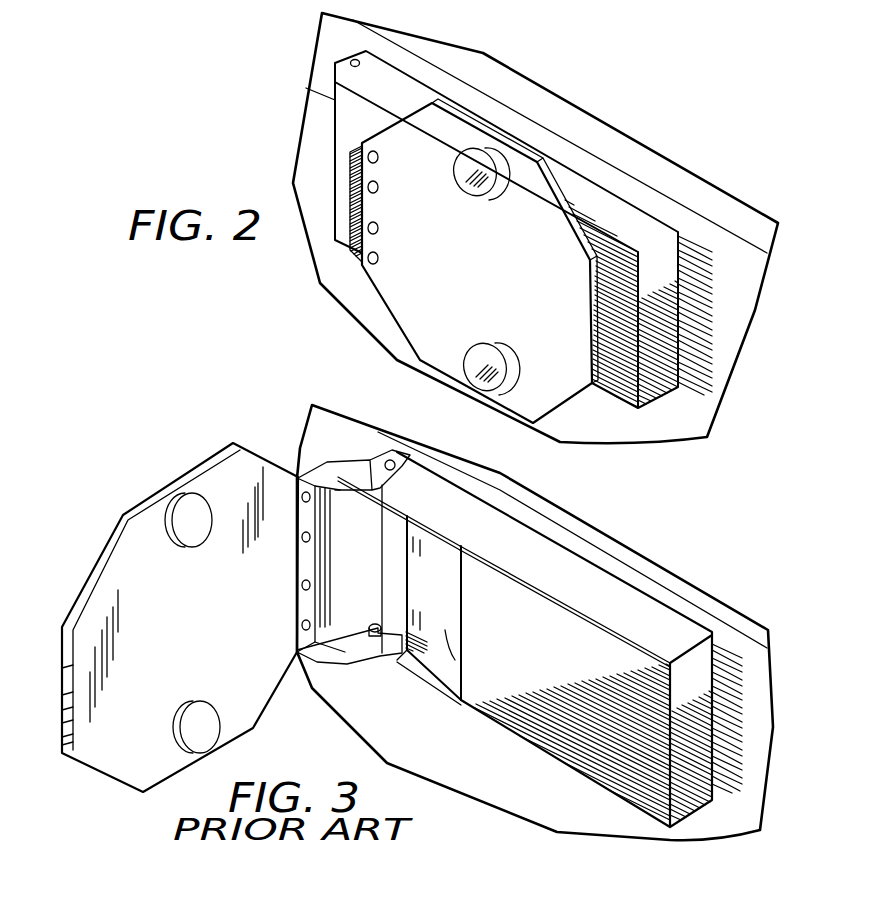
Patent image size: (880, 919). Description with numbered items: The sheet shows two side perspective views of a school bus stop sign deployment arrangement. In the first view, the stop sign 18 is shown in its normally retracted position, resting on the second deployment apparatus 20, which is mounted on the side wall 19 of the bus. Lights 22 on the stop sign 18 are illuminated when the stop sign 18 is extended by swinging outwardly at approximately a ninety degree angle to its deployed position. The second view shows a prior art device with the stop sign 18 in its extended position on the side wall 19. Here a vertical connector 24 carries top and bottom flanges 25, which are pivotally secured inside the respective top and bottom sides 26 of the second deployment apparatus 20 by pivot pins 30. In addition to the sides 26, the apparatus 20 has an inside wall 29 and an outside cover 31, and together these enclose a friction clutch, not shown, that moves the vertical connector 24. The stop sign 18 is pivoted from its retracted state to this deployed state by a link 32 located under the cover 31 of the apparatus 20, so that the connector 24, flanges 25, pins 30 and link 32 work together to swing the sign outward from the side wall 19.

In FIG. 2, the stop sign 18 is at (560, 403).
In FIG. 3, the stop sign 18 is at (177, 477).
In FIG. 2, the side wall 19 is at (750, 278).
In FIG. 2, the second deployment apparatus 20 is at (688, 226).
In FIG. 3, the second deployment apparatus 20 is at (722, 658).
In FIG. 2, the lights 22 is at (458, 166).
In FIG. 3, the vertical connector 24 is at (303, 557).
In FIG. 3, the top and bottom flanges 25 is at (300, 470).
In FIG. 3, the top and bottom sides 26 is at (417, 483).
In FIG. 3, the inside wall 29 is at (447, 623).
In FIG. 3, the pivot pins 30 is at (386, 460).
In FIG. 3, the outside cover 31 is at (563, 630).
In FIG. 3, the link 32 is at (423, 520).